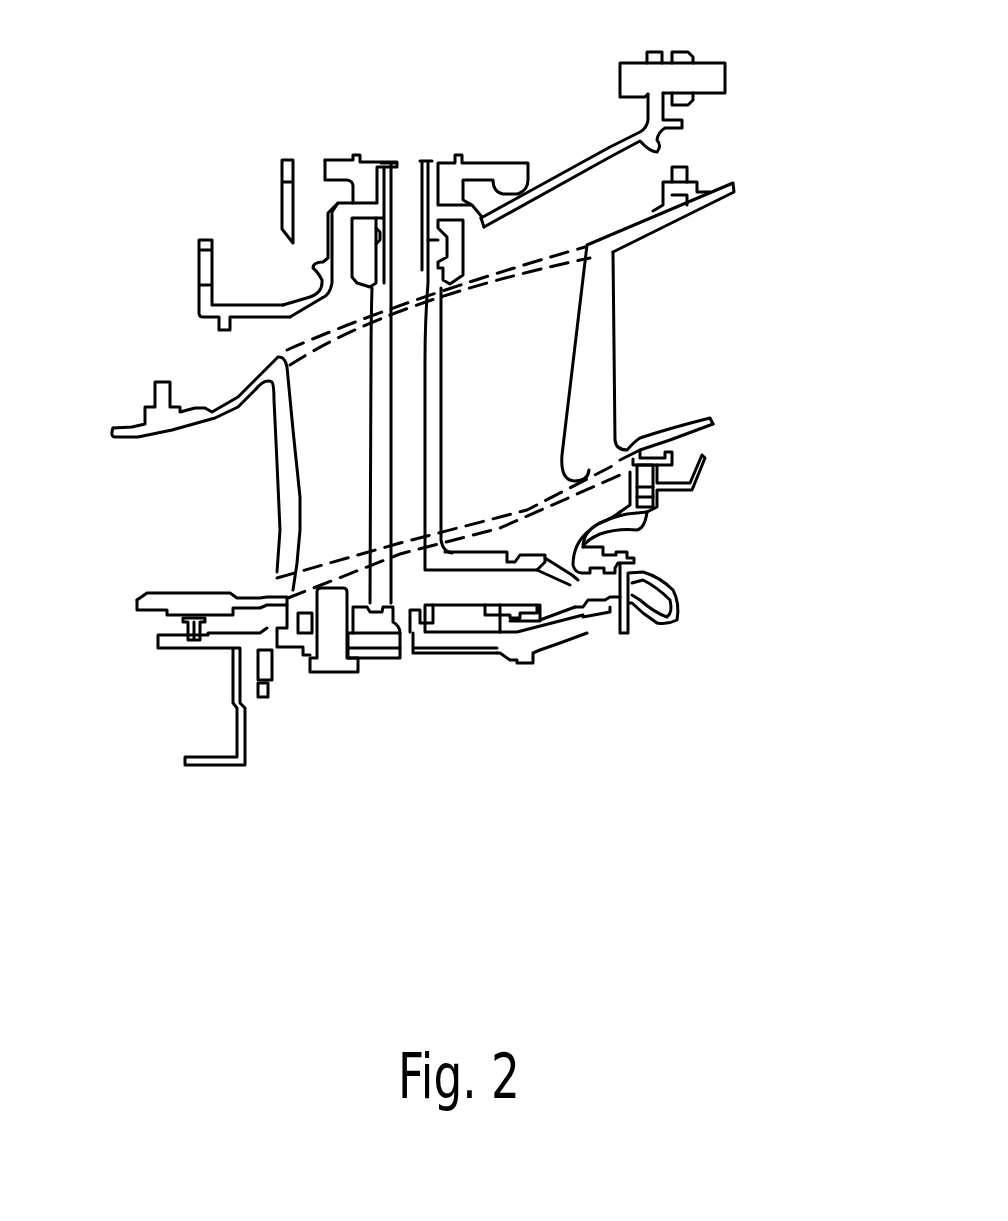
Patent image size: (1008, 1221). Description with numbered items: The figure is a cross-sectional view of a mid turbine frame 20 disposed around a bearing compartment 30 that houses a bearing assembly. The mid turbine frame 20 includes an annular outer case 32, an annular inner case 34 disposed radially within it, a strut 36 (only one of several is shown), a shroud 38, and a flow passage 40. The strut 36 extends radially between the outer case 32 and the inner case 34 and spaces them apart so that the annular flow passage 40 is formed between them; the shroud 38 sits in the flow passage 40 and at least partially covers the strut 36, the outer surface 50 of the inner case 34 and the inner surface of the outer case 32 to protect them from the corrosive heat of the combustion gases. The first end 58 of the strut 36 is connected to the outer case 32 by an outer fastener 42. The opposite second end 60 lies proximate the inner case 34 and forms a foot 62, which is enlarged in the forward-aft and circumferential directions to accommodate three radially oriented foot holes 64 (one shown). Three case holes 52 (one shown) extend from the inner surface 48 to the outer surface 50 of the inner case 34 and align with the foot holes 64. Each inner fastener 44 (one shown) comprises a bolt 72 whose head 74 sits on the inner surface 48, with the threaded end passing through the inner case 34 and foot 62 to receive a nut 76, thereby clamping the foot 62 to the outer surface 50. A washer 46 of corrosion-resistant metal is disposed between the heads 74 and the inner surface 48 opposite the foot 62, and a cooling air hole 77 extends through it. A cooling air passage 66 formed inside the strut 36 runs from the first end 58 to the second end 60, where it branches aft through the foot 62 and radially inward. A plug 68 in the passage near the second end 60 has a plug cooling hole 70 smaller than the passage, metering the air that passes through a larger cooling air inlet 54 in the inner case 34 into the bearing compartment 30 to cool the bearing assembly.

The mid turbine frame 20 is at (270, 118).
The bearing compartment 30 is at (617, 811).
The annular outer case 32 is at (589, 142).
The annular inner case 34 is at (468, 658).
The strut 36 is at (454, 396).
The shroud 38 is at (593, 283).
The flow passage 40 is at (710, 342).
The outer fastener 42 is at (342, 177).
The inner fastener 44 is at (320, 676).
The washer 46 is at (381, 672).
The inner surface 48 is at (497, 653).
The outer surface 50 is at (472, 628).
The case hole 52 is at (283, 585).
The cooling air inlet 54 is at (417, 641).
The first end 58 is at (430, 254).
The second end 60 is at (378, 597).
The foot 62 is at (450, 617).
The foot hole 64 is at (293, 617).
The cooling air passage 66 is at (422, 419).
The plug 68 is at (420, 633).
The plug cooling hole 70 is at (360, 603).
The bolt 72 is at (335, 618).
The head 74 is at (336, 652).
The nut 76 is at (320, 610).
The cooling air hole 77 is at (407, 645).